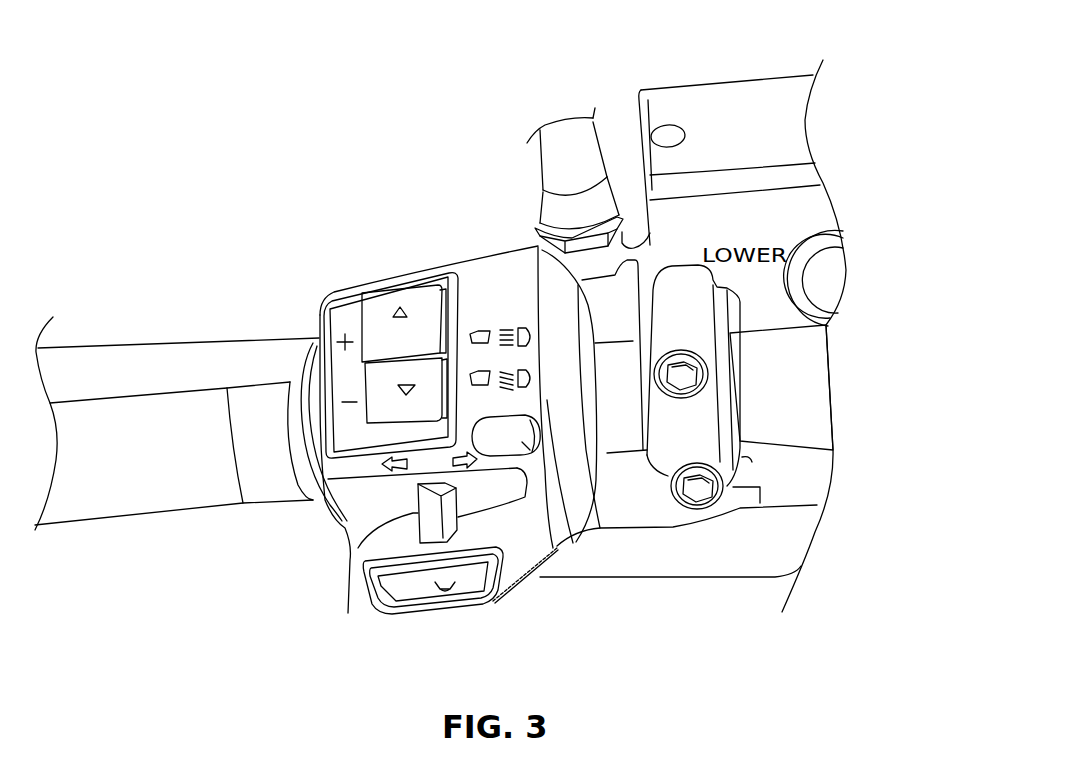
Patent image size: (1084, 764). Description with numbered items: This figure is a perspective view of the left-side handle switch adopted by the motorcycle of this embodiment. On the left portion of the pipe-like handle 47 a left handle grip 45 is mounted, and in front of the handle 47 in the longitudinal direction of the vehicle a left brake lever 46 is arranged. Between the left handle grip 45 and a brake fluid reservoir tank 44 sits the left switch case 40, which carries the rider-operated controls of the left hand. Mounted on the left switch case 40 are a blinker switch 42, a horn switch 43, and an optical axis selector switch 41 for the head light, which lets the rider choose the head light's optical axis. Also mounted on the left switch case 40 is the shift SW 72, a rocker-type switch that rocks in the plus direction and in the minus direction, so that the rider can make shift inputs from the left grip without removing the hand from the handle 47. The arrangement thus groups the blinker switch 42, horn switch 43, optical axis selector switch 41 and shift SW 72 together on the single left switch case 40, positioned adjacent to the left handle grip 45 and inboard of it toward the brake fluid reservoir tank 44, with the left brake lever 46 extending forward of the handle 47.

The left switch case 40 is at (468, 240).
The optical axis selector switch 41 is at (552, 548).
The blinker switch 42 is at (348, 613).
The horn switch 43 is at (402, 598).
The brake fluid reservoir tank 44 is at (718, 88).
The left handle grip 45 is at (157, 492).
The left brake lever 46 is at (140, 353).
The handle 47 is at (788, 390).
The shift SW 72 is at (375, 313).